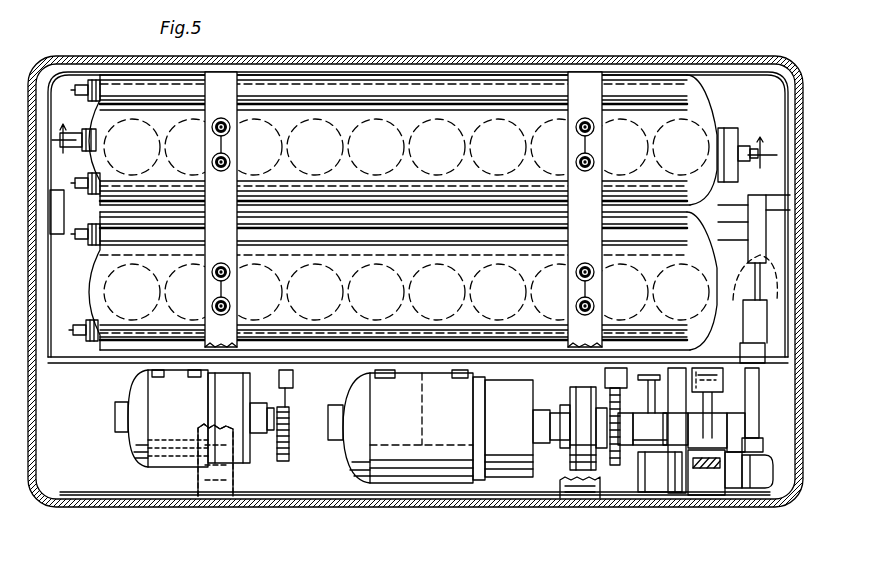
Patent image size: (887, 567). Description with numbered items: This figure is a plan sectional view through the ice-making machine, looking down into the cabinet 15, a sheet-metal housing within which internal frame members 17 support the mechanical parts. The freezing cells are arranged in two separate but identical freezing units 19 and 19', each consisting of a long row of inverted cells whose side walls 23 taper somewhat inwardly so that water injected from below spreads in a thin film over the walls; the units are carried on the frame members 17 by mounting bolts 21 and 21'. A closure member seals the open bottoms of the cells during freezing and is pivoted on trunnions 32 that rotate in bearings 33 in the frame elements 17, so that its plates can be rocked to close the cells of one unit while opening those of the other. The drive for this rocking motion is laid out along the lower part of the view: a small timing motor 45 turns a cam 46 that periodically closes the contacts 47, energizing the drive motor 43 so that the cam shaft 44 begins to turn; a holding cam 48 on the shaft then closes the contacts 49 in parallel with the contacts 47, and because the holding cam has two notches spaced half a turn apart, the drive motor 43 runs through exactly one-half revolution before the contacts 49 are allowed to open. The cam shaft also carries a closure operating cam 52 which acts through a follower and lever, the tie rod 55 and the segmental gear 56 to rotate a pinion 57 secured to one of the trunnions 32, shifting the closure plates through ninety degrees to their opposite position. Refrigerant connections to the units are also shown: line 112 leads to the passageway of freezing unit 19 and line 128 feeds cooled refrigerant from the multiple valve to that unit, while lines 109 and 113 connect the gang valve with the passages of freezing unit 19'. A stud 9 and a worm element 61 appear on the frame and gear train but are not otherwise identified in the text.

The terminal stud 9 is at (414, 157).
The cabinet 15 is at (110, 57).
The internal frame members 17 is at (238, 96).
The freezing unit 19 is at (403, 118).
The freezing unit 19' is at (403, 310).
The mounting bolts 21 is at (437, 212).
The mounting bolts 21' is at (606, 289).
The side walls 23 is at (438, 118).
The trunnions 32 is at (38, 246).
The bearings 33 is at (54, 236).
The drive motor 43 is at (449, 426).
The cam shaft 44 is at (634, 466).
The timing motor 45 is at (194, 418).
The cam 46 is at (284, 461).
The contacts 47 is at (294, 380).
The holding cam 48 is at (613, 466).
The contacts 49 is at (614, 390).
The closure operating cam 52 is at (740, 412).
The tie rod 55 is at (758, 392).
The segmental gear 56 is at (756, 278).
The pinion 57 is at (722, 192).
The worm gear 61 is at (679, 456).
The line 109 is at (84, 247).
The line 112 is at (86, 84).
The line 113 is at (82, 343).
The line 128 is at (93, 176).